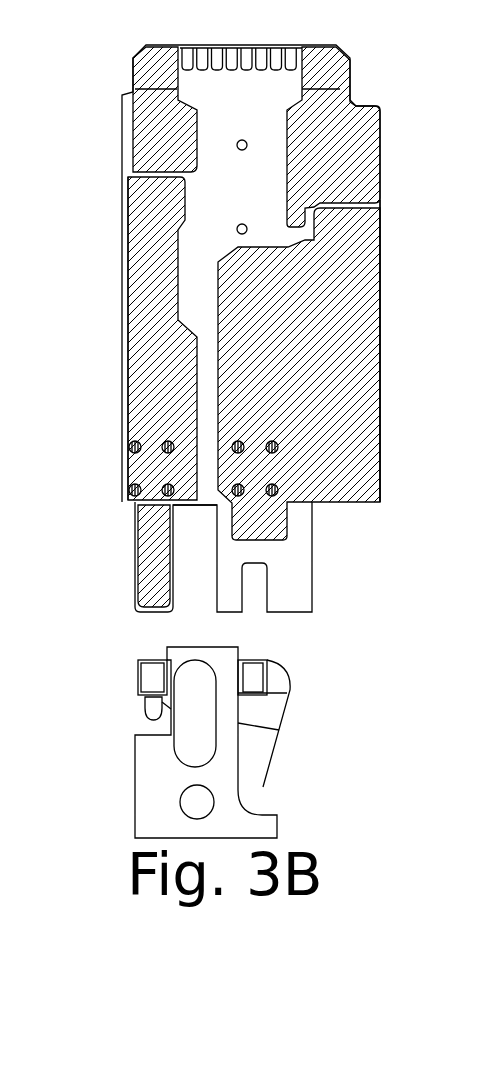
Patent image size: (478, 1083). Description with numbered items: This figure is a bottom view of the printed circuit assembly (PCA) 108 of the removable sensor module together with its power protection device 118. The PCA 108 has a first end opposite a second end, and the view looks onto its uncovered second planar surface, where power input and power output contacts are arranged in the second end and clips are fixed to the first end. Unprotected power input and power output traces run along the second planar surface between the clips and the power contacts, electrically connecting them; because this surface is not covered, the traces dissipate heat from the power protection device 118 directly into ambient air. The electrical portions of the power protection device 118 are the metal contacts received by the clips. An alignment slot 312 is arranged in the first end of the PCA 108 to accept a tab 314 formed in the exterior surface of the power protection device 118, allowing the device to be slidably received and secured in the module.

The printed circuit assembly 108 is at (384, 326).
The power protection device 118 is at (384, 703).
The alignment slot 312 is at (196, 598).
The tab 314 is at (172, 722).